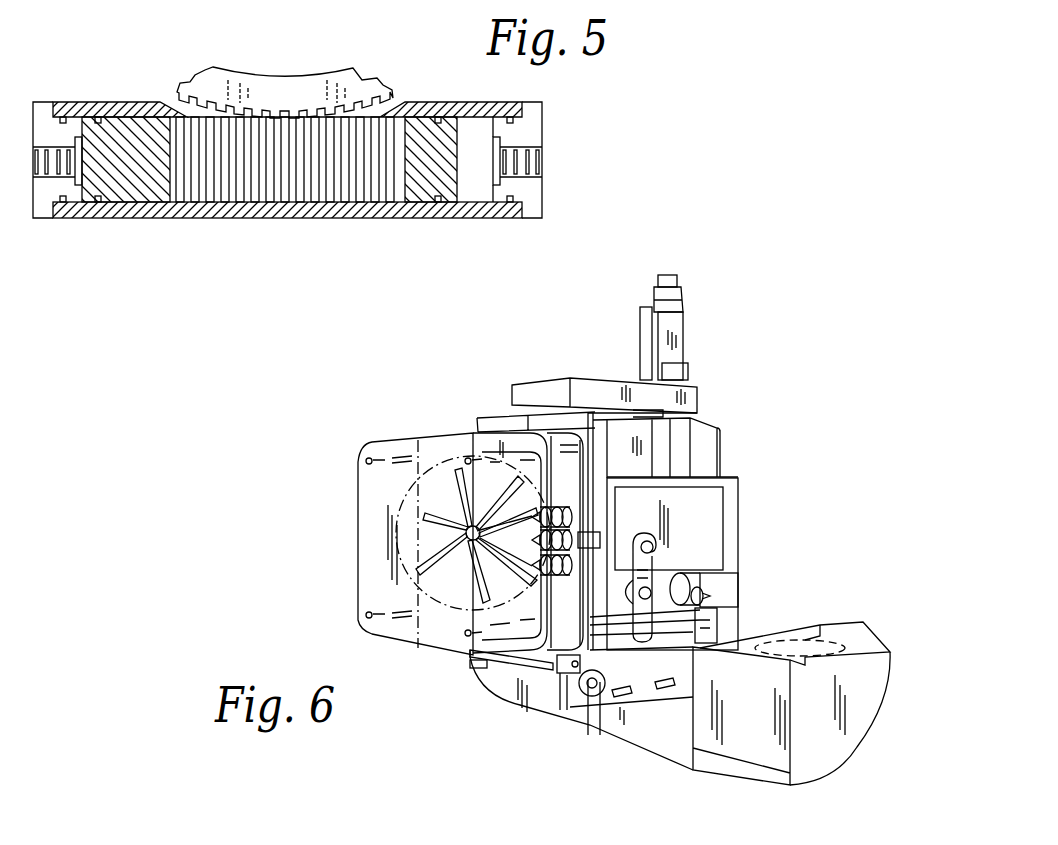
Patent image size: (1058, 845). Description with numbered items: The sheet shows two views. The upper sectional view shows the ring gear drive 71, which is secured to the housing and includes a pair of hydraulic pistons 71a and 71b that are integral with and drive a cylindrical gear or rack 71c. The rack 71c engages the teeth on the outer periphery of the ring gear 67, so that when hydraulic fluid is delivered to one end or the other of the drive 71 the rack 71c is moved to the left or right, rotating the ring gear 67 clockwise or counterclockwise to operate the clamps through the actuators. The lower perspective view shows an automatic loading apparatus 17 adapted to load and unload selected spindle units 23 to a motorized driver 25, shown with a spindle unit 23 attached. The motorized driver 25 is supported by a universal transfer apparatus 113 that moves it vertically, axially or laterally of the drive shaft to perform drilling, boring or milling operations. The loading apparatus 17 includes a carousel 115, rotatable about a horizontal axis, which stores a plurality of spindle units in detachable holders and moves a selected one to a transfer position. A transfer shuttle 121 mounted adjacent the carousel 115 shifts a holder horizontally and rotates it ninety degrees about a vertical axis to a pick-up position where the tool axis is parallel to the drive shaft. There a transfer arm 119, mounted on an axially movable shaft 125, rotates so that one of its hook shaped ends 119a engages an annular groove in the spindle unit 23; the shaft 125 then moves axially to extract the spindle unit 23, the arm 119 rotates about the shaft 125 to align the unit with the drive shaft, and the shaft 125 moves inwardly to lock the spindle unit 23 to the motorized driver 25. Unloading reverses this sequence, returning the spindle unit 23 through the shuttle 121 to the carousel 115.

In FIG. 5, the ring gear 67 is at (350, 80).
In FIG. 5, the ring gear drive 71 is at (287, 185).
In FIG. 5, the hydraulic piston 71a is at (102, 205).
In FIG. 5, the hydraulic piston 71b is at (461, 183).
In FIG. 5, the cylindrical gear or rack 71c is at (293, 214).
In FIG. 6, the automatic loading apparatus 17 is at (522, 511).
In FIG. 6, the carousel 115 is at (368, 516).
In FIG. 6, the universal transfer apparatus 113 is at (637, 462).
In FIG. 6, the spindle unit 23 is at (754, 621).
In FIG. 6, the transfer shuttle 121 is at (590, 528).
In FIG. 6, the transfer arm 119 is at (710, 576).
In FIG. 6, the hook shaped end 119a is at (655, 548).
In FIG. 6, the motorized driver 25 is at (727, 578).
In FIG. 6, the shaft 125 is at (576, 706).